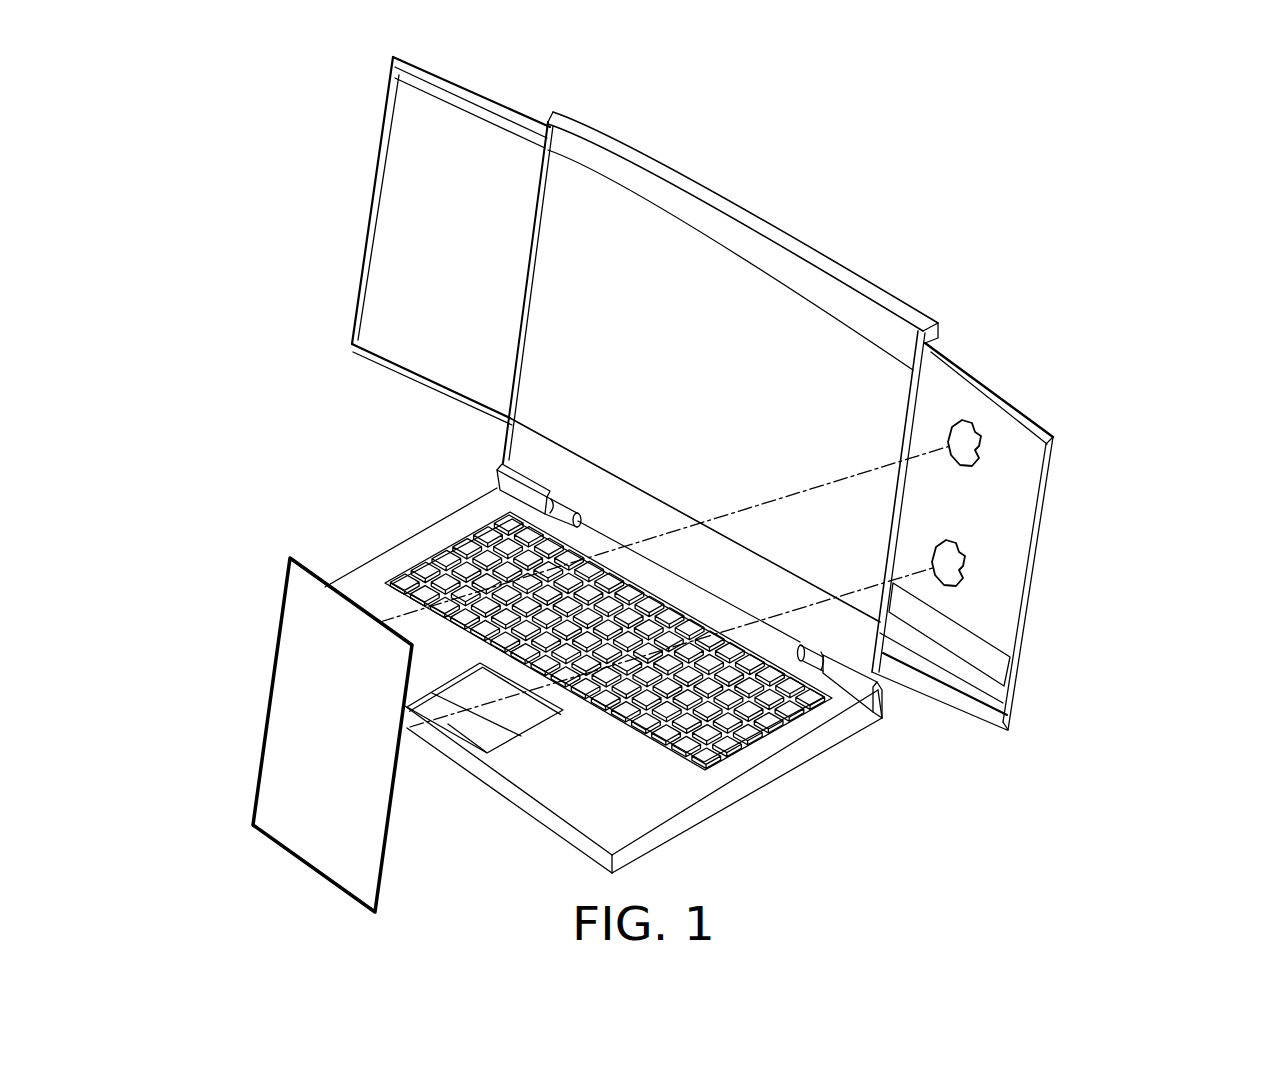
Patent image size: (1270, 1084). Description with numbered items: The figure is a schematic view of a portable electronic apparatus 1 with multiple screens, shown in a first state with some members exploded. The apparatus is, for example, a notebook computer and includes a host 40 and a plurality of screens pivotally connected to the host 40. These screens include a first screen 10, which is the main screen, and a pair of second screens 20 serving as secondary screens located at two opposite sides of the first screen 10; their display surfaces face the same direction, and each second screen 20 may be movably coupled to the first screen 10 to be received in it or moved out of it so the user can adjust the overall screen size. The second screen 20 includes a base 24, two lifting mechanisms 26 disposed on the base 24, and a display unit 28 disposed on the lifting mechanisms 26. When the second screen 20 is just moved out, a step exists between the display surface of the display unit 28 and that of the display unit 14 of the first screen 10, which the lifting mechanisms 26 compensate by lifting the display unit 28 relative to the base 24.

The portable electronic apparatus 1 is at (1251, 860).
The first screen 10 is at (645, 364).
The display unit 14 is at (822, 340).
The second screen 20 is at (1028, 548).
The base 24 is at (1017, 455).
The lifting mechanisms 26 is at (978, 452).
The display unit 28 is at (312, 725).
The host 40 is at (793, 752).